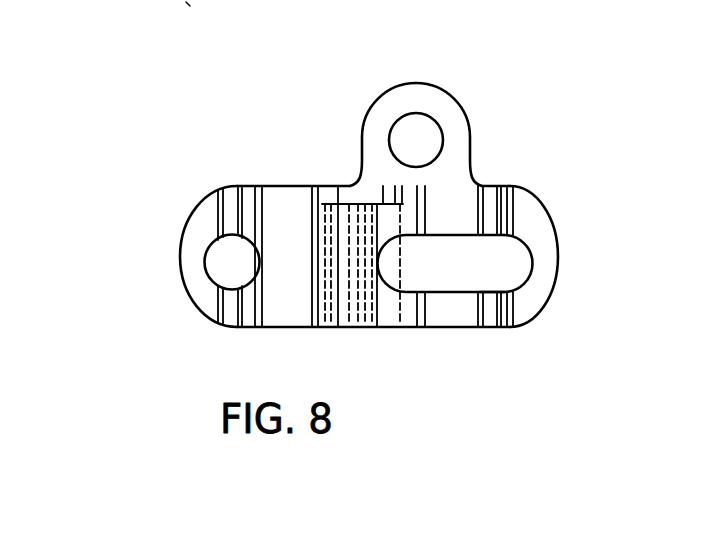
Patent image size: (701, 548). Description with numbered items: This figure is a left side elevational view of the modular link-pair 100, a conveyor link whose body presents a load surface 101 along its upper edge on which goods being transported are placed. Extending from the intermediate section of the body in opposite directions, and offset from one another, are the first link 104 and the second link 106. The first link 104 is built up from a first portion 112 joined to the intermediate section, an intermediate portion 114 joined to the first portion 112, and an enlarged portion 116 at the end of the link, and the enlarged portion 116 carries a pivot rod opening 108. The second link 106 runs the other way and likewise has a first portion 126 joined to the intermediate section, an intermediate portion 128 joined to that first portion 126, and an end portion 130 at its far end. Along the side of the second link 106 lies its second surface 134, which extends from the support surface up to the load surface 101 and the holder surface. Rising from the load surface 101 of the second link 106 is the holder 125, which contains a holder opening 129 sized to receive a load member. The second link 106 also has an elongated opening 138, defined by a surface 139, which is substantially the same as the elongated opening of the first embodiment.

The modular link-pair 100 is at (493, 116).
The load surface 101 is at (298, 190).
The first link 104 is at (232, 187).
The second link 106 is at (497, 181).
The pivot rod opening 108 is at (225, 265).
The first portion 112 is at (370, 215).
The intermediate portion 114 is at (282, 190).
The enlarged portion 116 is at (203, 218).
The holder 125 is at (432, 98).
The first portion 126 is at (381, 318).
The intermediate portion 128 is at (442, 316).
The holder opening 129 is at (417, 142).
The end portion 130 is at (540, 231).
The second surface 134 is at (538, 246).
The elongated opening 138 is at (492, 272).
The surface 139 is at (528, 276).